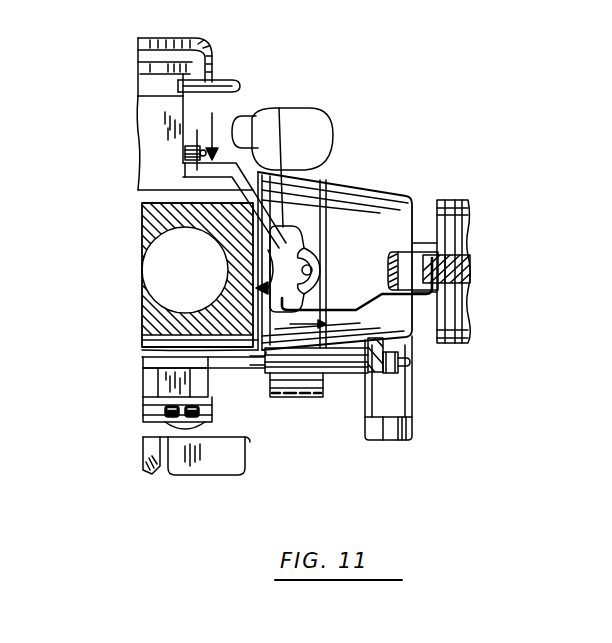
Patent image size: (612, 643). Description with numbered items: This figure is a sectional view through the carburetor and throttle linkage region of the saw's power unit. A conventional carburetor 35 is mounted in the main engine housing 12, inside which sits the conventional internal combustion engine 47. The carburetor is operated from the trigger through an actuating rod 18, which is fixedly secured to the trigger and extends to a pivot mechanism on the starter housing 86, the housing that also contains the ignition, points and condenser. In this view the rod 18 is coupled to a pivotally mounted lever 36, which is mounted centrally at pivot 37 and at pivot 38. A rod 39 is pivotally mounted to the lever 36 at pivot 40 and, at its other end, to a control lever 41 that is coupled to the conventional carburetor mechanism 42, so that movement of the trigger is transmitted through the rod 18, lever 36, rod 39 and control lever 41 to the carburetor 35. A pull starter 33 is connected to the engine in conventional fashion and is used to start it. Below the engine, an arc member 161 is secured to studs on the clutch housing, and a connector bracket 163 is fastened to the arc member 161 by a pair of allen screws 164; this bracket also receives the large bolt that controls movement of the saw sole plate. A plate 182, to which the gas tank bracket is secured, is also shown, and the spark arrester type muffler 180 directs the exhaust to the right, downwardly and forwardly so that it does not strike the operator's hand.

The main engine housing 12 is at (155, 195).
The actuating rod 18 is at (338, 340).
The pull starter 33 is at (413, 428).
The carburetor 35 is at (150, 150).
The lever 36 is at (322, 178).
The pivot 37 is at (338, 196).
The pivot 38 is at (262, 350).
The rod 39 is at (283, 227).
The pivot 40 is at (306, 165).
The control lever 41 is at (180, 120).
The carburetor mechanism 42 is at (190, 158).
The internal combustion engine 47 is at (147, 230).
The starter housing 86 is at (372, 256).
The arc member 161 is at (208, 378).
The connector bracket 163 is at (155, 402).
The allen screws 164 is at (143, 410).
The spark arrester type muffler 180 is at (279, 108).
The plate 182 is at (297, 397).